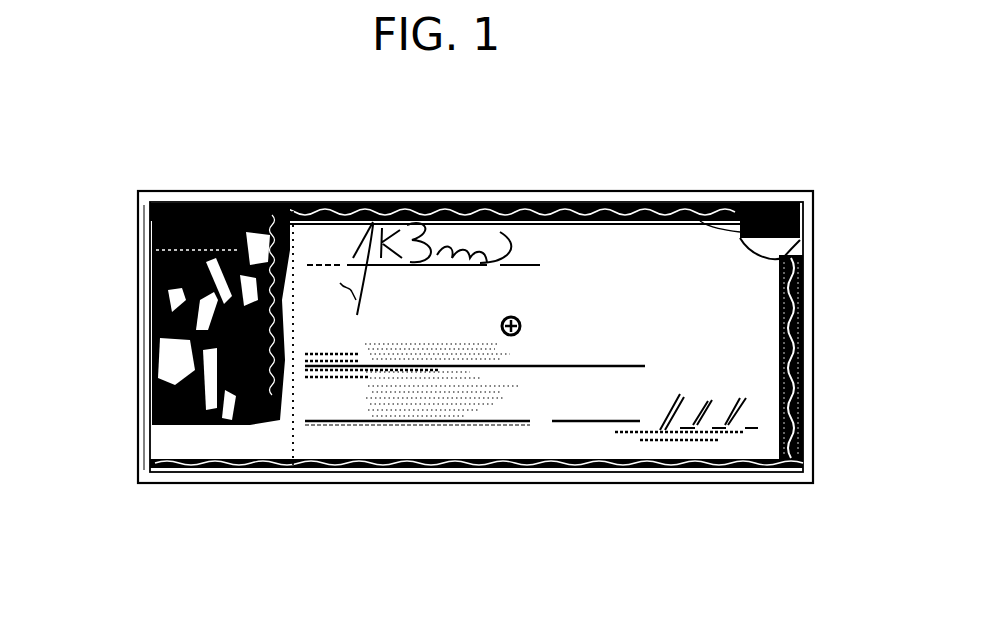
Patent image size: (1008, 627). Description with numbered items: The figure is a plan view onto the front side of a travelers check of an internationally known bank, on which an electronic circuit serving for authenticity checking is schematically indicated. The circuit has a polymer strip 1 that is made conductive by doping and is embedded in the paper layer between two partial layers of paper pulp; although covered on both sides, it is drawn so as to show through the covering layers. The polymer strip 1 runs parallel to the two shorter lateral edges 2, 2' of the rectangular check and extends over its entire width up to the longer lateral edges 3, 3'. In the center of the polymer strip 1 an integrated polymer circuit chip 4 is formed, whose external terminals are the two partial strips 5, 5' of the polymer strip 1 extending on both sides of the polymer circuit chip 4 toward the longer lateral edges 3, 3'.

The polymer strip 1 is at (298, 489).
The shorter lateral edge 2 is at (826, 357).
The shorter lateral edge 2' is at (91, 337).
The longer lateral edge 3 is at (475, 192).
The longer lateral edge 3' is at (476, 507).
The polymer circuit chip 4 is at (268, 362).
The partial strip 5 is at (251, 227).
The partial strip 5' is at (269, 444).